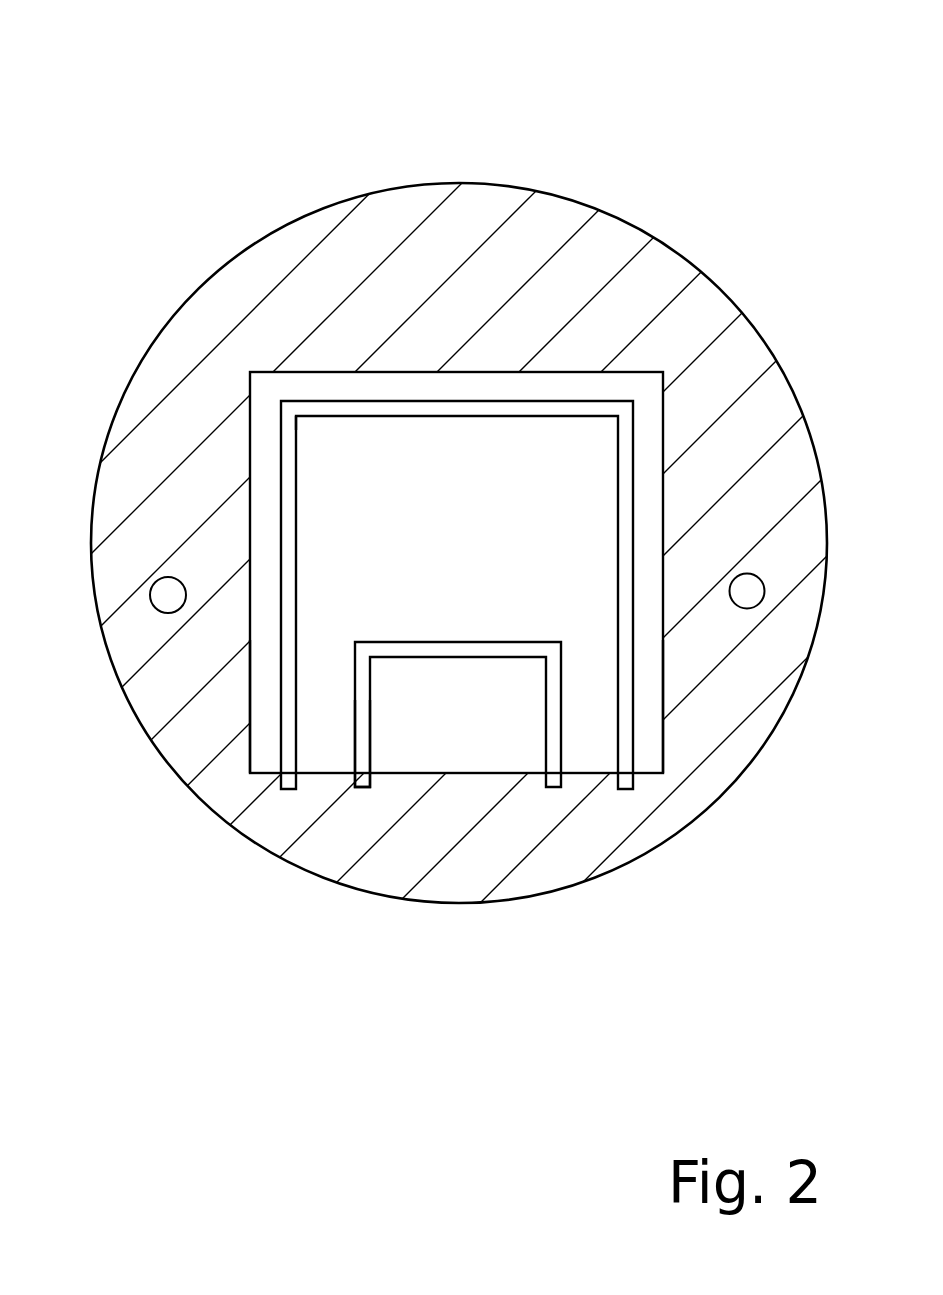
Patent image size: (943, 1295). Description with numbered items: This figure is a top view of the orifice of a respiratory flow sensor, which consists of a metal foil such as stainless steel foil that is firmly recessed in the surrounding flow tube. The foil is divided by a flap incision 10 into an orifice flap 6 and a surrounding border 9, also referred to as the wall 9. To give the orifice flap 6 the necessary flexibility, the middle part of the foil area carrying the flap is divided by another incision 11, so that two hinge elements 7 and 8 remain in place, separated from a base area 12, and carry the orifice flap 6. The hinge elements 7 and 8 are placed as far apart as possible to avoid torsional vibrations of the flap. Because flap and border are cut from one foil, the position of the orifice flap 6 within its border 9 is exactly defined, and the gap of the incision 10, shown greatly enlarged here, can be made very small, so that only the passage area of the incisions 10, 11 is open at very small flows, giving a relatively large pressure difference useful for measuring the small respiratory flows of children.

The orifice flap 6 is at (483, 528).
The hinge element 7 is at (324, 727).
The hinge element 8 is at (585, 722).
The border 9 is at (307, 387).
The flap incision 10 is at (568, 405).
The incision 11 is at (367, 752).
The base area 12 is at (471, 711).